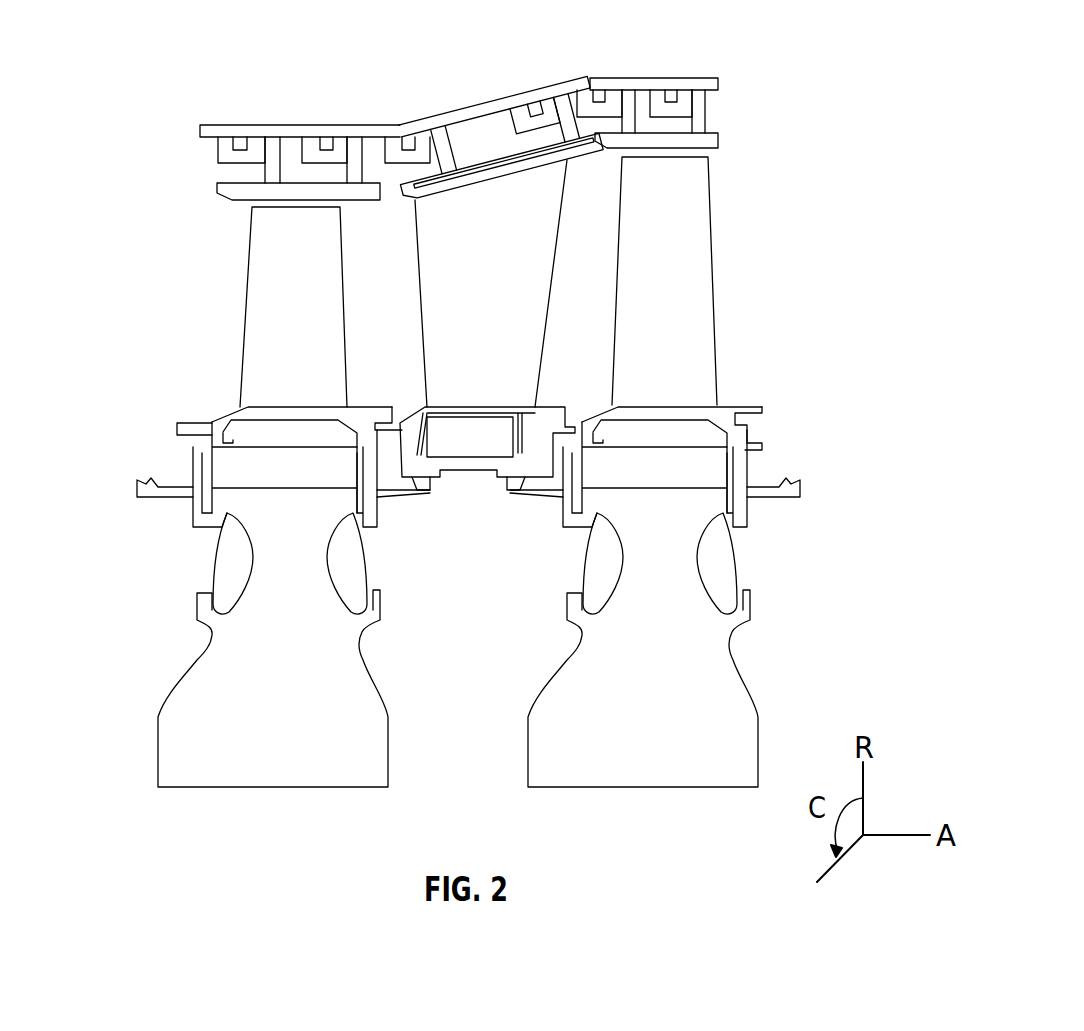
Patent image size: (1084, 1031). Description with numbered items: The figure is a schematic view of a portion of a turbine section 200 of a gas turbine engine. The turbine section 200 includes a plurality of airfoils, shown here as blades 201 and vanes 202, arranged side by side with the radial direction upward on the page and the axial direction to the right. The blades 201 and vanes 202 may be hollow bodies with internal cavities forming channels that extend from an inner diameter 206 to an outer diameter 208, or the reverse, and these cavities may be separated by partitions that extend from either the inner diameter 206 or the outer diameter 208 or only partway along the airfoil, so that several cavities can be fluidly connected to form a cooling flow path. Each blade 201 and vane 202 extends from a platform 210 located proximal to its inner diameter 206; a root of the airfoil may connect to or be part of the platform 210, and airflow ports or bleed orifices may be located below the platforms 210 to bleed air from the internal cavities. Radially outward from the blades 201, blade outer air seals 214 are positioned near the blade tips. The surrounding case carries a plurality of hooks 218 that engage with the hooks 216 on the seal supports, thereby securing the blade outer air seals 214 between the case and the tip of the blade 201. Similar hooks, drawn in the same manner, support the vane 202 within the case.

The turbine section 200 is at (133, 80).
The blade 201 is at (327, 265).
The vane 202 is at (535, 258).
The inner diameter 206 is at (411, 396).
The outer diameter 208 is at (227, 217).
The platform 210 is at (553, 407).
The blade outer air seal 214 is at (286, 193).
The hook 216 is at (267, 147).
The hook 218 is at (222, 146).